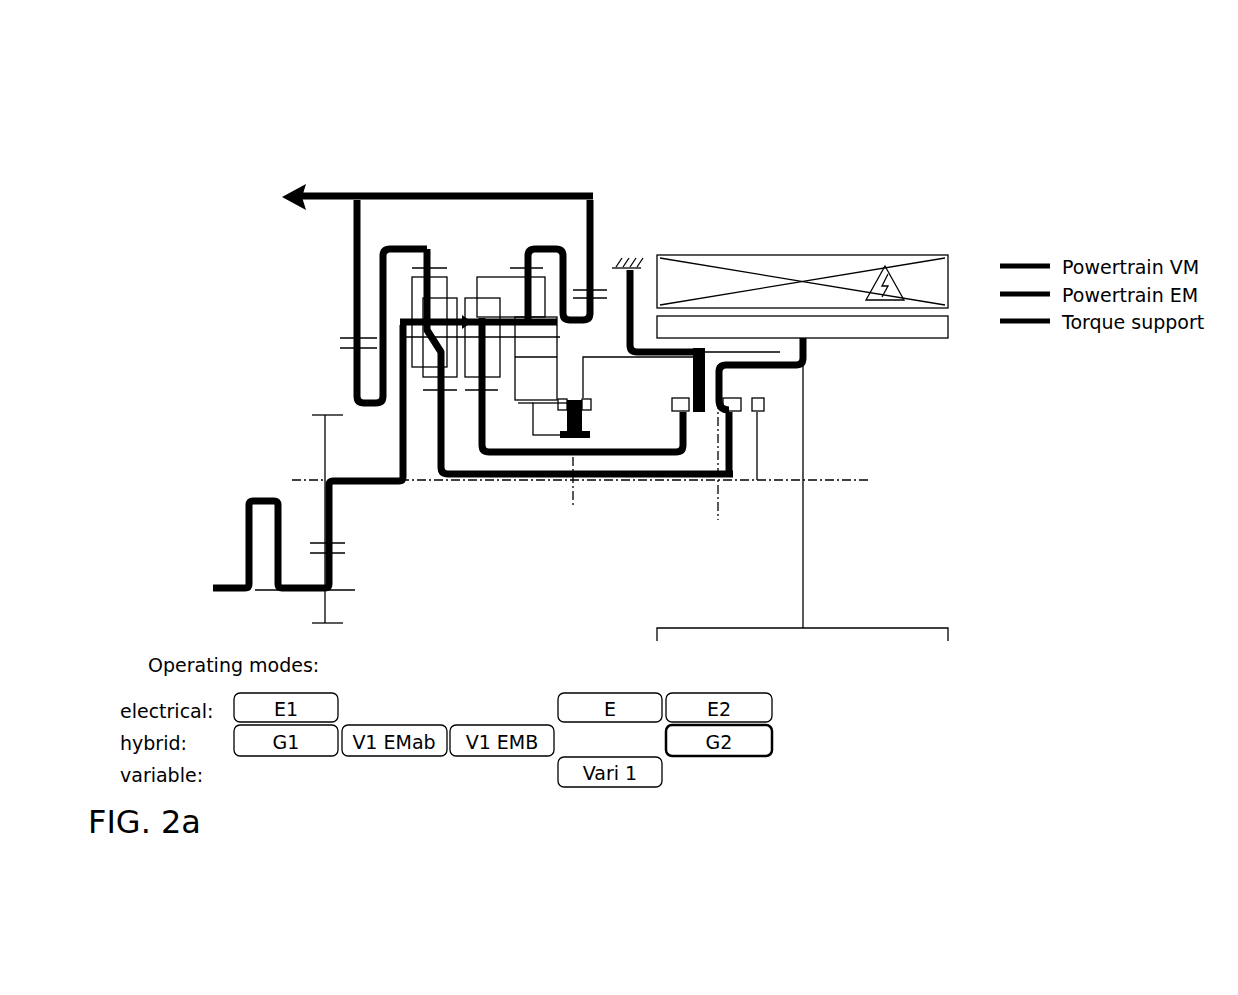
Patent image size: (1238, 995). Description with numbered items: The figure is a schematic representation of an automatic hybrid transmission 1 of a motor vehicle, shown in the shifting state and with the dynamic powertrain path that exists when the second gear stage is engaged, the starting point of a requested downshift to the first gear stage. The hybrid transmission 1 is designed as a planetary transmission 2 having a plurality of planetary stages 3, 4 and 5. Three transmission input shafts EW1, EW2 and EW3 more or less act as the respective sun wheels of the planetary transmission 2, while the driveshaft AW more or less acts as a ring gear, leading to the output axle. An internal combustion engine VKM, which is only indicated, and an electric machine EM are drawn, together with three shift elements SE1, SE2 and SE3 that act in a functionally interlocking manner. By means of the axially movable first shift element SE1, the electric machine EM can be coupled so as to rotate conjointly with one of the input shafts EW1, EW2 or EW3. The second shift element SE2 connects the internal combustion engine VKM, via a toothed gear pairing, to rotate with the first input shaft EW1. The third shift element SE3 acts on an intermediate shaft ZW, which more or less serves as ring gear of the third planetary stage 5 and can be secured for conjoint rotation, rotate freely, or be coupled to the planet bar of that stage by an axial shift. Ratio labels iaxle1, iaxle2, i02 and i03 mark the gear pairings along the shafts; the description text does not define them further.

The hybrid transmission 1 is at (768, 148).
The planetary transmission 2 is at (610, 180).
The planetary stage 3 is at (452, 300).
The planetary stage 4 is at (474, 300).
The third planetary stage 5 is at (526, 386).
The driveshaft AW is at (331, 193).
The electric machine EM is at (917, 262).
The internal combustion engine VKM is at (283, 464).
The intermediate shaft ZW is at (634, 433).
The first shift element SE1 is at (707, 373).
The second shift element SE2 is at (282, 500).
The third shift element SE3 is at (574, 437).
The first transmission input shaft EW1 is at (757, 445).
The second transmission input shaft EW2 is at (722, 472).
The third transmission input shaft EW3 is at (607, 452).
The first axle ratio iaxle1 is at (392, 301).
The second axle ratio iaxle2 is at (559, 260).
The gear ratio i02 is at (566, 385).
The gear ratio i03 is at (571, 361).